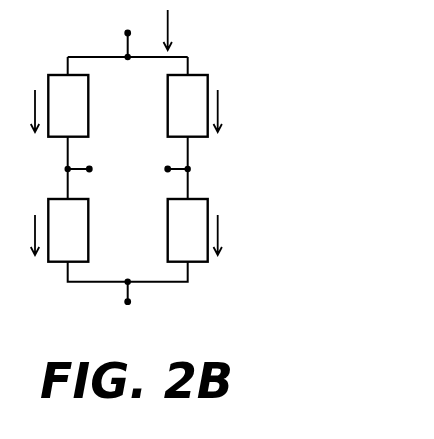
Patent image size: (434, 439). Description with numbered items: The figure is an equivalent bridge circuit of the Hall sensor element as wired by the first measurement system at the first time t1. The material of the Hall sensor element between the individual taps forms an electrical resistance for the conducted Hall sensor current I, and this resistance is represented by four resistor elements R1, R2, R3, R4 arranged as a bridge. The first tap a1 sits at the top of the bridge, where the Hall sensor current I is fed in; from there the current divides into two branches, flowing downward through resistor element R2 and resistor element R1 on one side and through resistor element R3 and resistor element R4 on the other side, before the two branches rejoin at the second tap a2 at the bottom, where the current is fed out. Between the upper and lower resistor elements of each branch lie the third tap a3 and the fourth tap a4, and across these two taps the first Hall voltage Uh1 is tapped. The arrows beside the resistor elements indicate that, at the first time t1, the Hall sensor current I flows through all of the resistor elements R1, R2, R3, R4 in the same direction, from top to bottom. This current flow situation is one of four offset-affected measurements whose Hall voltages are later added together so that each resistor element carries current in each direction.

The first time t1 is at (62, 25).
The first tap a1 is at (130, 22).
The second tap a2 is at (131, 315).
The third tap a3 is at (104, 169).
The fourth tap a4 is at (153, 169).
The Hall sensor current I is at (172, 26).
The resistor element R1 is at (60, 230).
The resistor element R2 is at (60, 106).
The resistor element R3 is at (195, 106).
The resistor element R4 is at (195, 230).
The first Hall voltage Uh1 is at (129, 187).